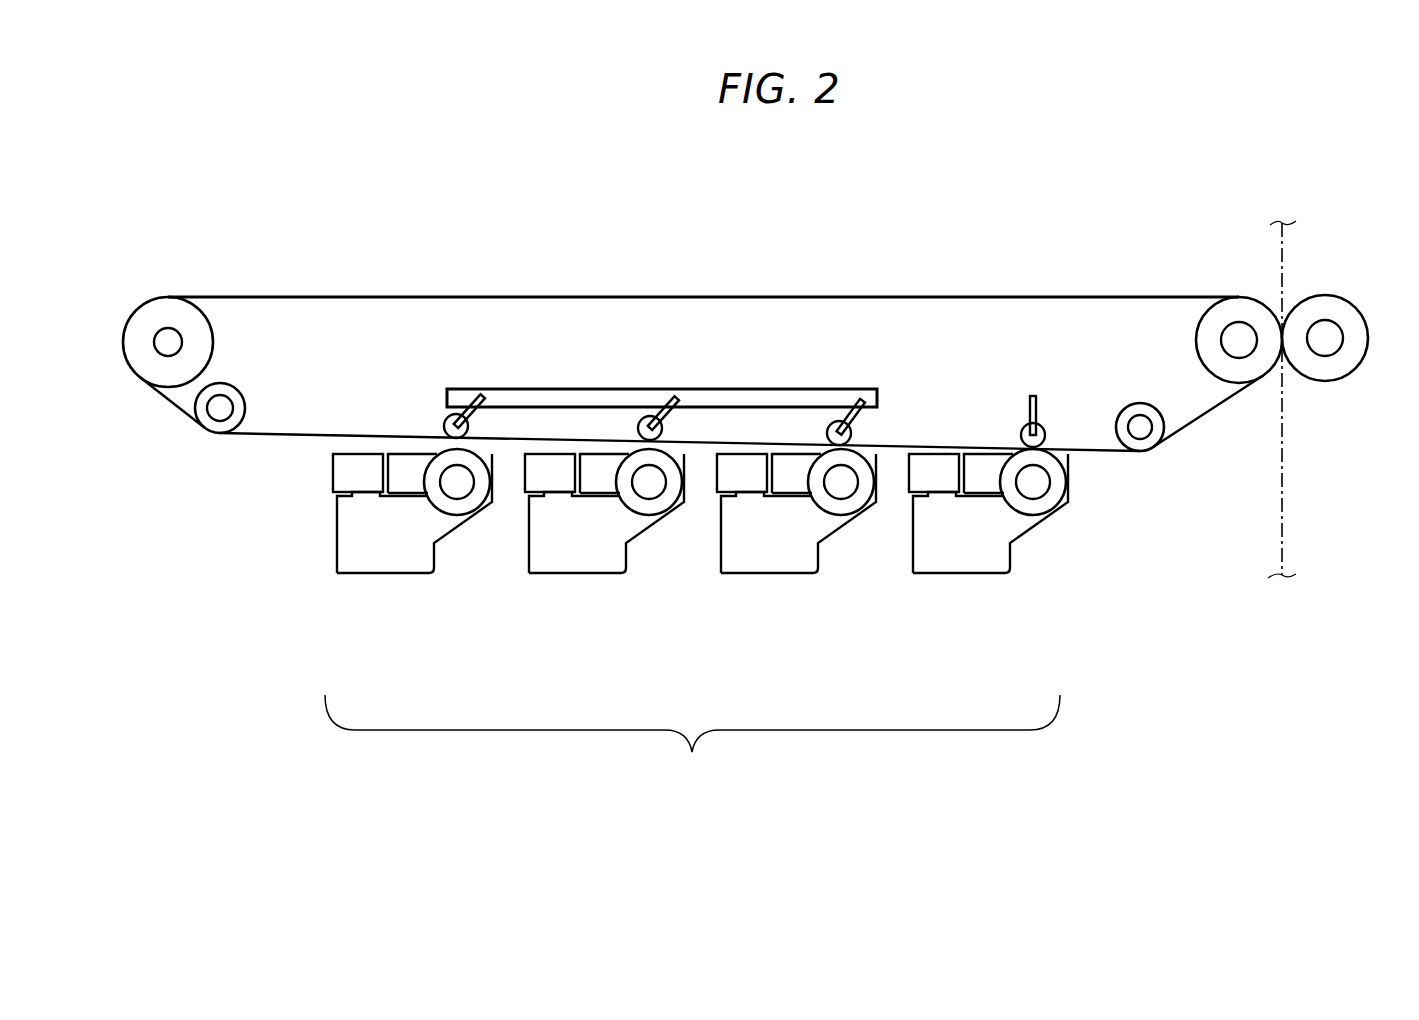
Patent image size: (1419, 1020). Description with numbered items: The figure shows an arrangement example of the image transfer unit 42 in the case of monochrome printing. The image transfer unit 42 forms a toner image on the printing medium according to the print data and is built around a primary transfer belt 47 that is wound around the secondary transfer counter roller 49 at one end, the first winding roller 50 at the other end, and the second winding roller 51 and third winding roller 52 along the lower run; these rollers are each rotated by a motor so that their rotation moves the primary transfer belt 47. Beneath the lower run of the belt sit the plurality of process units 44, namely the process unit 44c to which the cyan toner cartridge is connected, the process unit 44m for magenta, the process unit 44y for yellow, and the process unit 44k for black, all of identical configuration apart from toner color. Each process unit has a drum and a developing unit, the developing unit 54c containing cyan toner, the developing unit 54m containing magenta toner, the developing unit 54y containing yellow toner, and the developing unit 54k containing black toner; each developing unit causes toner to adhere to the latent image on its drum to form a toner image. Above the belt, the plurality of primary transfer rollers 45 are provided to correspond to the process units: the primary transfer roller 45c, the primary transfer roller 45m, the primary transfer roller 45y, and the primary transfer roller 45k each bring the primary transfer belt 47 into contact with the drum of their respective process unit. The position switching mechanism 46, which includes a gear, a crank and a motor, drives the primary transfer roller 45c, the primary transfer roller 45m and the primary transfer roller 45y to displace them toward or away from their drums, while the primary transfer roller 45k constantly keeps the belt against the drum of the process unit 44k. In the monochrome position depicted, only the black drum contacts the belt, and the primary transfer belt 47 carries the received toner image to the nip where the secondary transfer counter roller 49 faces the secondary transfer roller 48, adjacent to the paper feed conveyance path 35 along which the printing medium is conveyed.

The image transfer unit 42 is at (703, 214).
The primary transfer belt 47 is at (680, 297).
The first winding roller 50 is at (214, 338).
The second winding roller 51 is at (245, 392).
The third winding roller 52 is at (1139, 403).
The secondary transfer counter roller 49 is at (1196, 337).
The secondary transfer roller 48 is at (1369, 337).
The paper feed conveyance path 35 is at (1282, 509).
The position switching mechanism 46 is at (599, 388).
The primary transfer rollers 45 is at (1048, 393).
The primary transfer roller 45c is at (444, 424).
The primary transfer roller 45m is at (638, 429).
The primary transfer roller 45y is at (827, 433).
The primary transfer roller 45k is at (1021, 435).
The developing unit 54c is at (387, 578).
The developing unit 54m is at (572, 541).
The developing unit 54y is at (764, 541).
The developing unit 54k is at (956, 541).
The process unit 44c is at (441, 586).
The process unit 44m is at (633, 586).
The process unit 44y is at (825, 586).
The process unit 44k is at (1017, 586).
The process units 44 is at (692, 741).